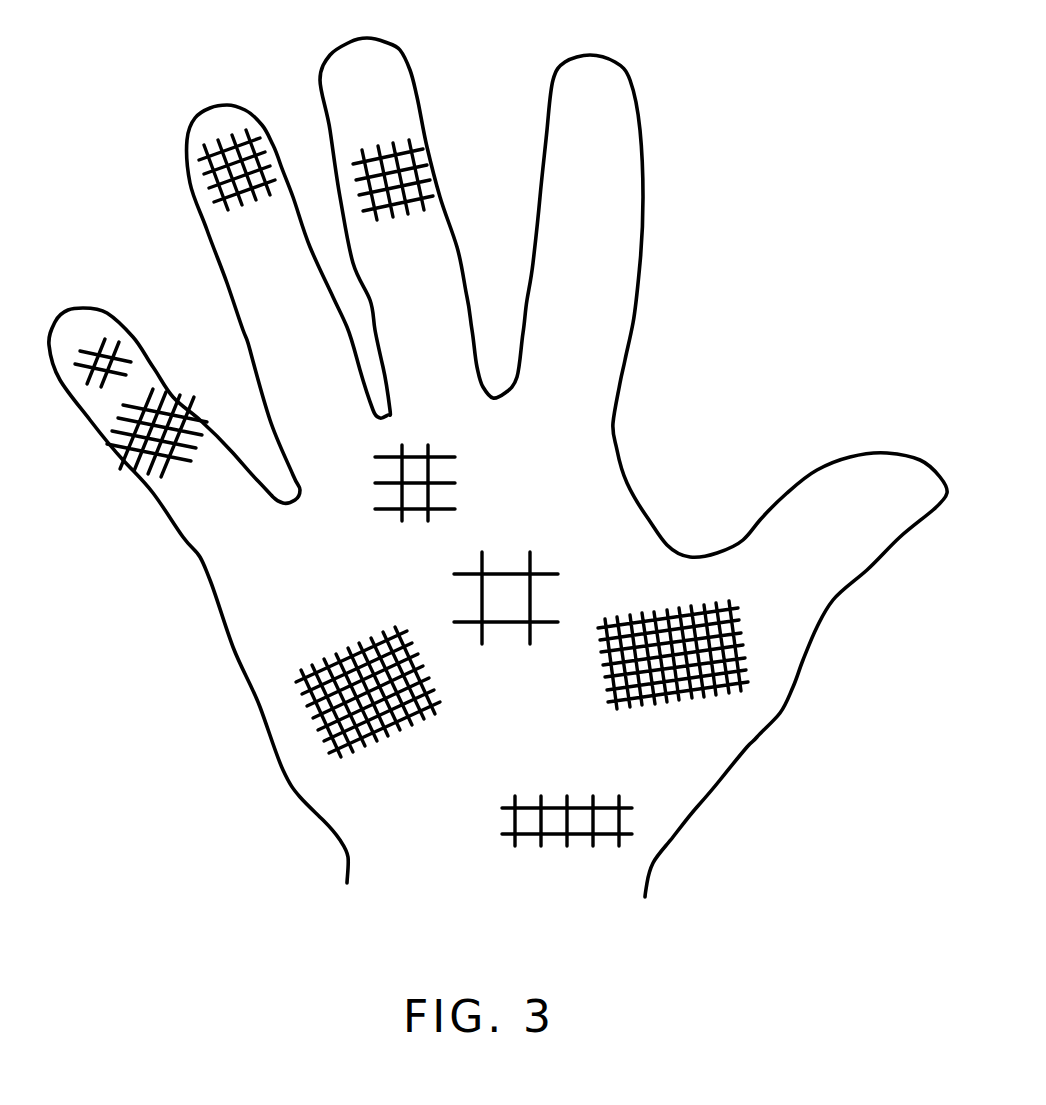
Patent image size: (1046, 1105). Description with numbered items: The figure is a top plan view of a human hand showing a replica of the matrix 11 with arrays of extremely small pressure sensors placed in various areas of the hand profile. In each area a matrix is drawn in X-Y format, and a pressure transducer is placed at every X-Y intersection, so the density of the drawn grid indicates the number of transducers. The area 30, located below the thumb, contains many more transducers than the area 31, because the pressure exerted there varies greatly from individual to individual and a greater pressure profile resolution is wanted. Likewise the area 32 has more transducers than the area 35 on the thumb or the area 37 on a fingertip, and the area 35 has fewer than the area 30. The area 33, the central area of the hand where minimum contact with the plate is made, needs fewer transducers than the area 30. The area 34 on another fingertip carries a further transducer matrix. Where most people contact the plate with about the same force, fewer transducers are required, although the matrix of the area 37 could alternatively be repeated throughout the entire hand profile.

The matrix 11 is at (888, 502).
The area 30 is at (743, 652).
The area 31 is at (627, 797).
The area 32 is at (317, 713).
The area 33 is at (540, 558).
The area 34 is at (237, 153).
The area 35 is at (140, 443).
The area 37 is at (393, 150).